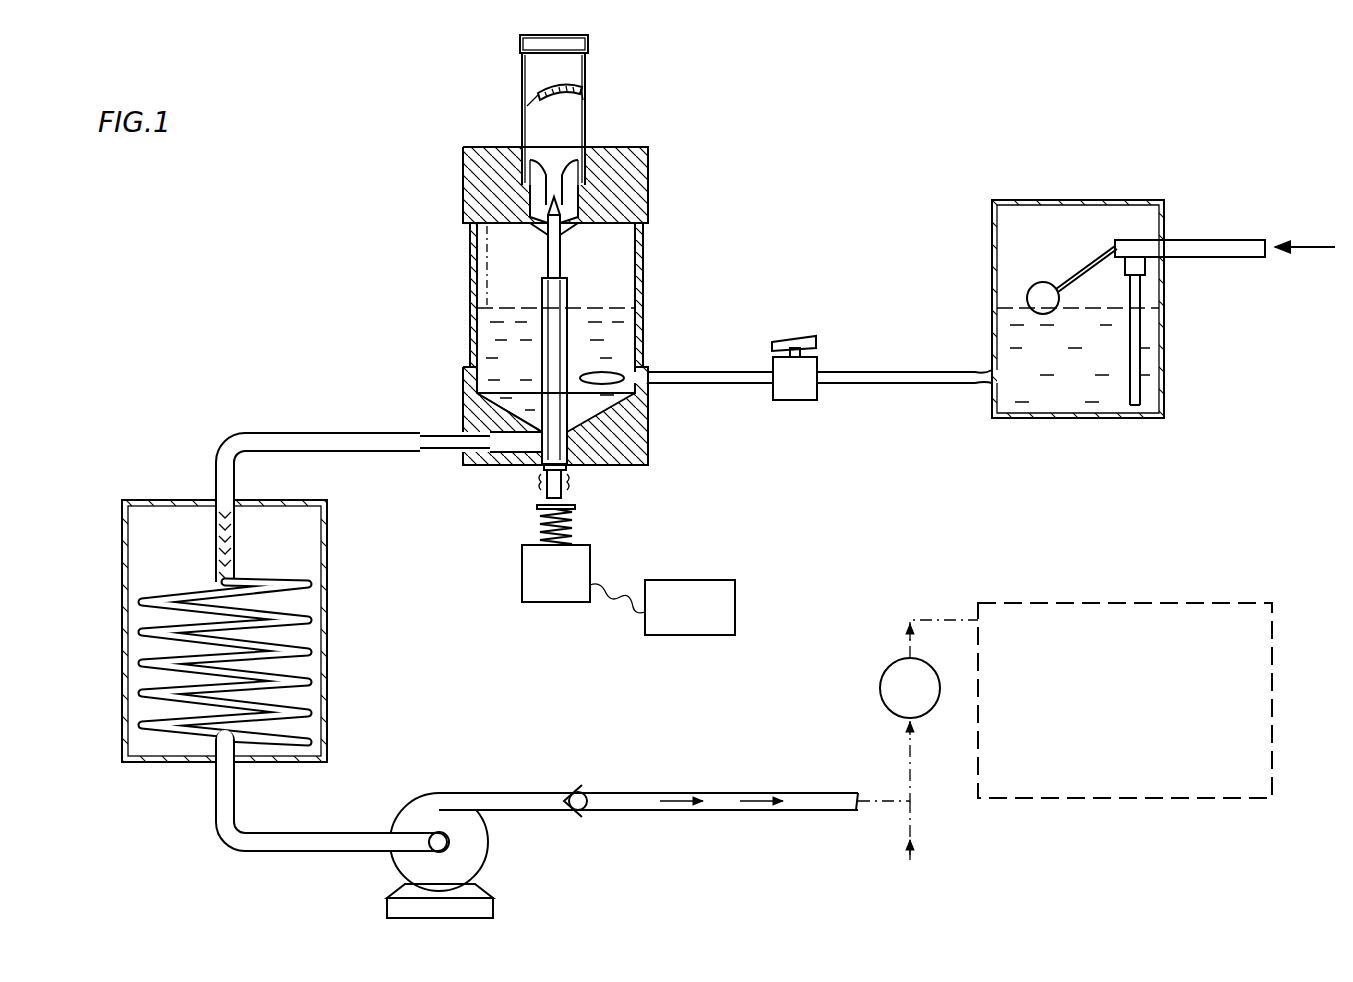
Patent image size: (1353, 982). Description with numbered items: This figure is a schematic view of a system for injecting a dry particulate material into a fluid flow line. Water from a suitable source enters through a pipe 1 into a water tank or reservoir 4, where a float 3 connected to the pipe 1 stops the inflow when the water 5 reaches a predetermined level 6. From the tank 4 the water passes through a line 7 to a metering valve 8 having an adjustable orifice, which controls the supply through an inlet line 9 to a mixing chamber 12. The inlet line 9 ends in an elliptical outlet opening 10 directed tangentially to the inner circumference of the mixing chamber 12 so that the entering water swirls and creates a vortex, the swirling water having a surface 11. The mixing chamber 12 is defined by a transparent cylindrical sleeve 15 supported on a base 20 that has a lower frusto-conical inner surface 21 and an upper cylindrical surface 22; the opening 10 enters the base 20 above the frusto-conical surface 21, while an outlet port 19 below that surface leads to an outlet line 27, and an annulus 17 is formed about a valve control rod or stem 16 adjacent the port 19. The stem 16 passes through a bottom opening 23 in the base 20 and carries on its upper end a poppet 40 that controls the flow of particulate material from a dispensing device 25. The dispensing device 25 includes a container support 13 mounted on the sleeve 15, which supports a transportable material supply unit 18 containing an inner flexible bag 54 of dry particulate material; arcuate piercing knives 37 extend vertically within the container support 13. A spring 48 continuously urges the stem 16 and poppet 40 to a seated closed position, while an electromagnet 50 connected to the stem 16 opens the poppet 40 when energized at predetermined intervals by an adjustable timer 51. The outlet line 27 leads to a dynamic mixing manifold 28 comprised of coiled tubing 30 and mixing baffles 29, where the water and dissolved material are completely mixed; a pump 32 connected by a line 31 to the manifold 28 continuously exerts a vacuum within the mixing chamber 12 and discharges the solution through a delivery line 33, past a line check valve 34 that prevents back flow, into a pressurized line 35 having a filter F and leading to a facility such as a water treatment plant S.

The pipe 1 is at (1315, 250).
The float 3 is at (1043, 282).
The water tank 4 is at (1012, 200).
The water 5 is at (1106, 400).
The predetermined level 6 is at (1010, 308).
The line 7 is at (907, 385).
The metering valve 8 is at (810, 368).
The inlet line 9 is at (729, 385).
The elliptical outlet opening 10 is at (603, 377).
The surface of the swirling water 11 is at (610, 305).
The mixing chamber 12 is at (615, 256).
The container support 13 is at (472, 182).
The transparent cylindrical sleeve 15 is at (470, 241).
The valve control rod or stem 16 is at (544, 290).
The annulus 17 is at (600, 466).
The material supply unit 18 is at (590, 82).
The outlet port 19 is at (513, 450).
The base 20 is at (652, 453).
The frusto-conical inner surface 21 is at (478, 394).
The upper cylindrical surface 22 is at (478, 366).
The bottom opening 23 is at (545, 471).
The dispensing device 25 is at (668, 150).
The outlet line 27 is at (306, 432).
The dynamic mixing manifold 28 is at (172, 498).
The mixing baffles 29 is at (216, 532).
The coiled tubing 30 is at (140, 622).
The line 31 is at (215, 836).
The pump 32 is at (422, 795).
The delivery line 33 is at (518, 793).
The line check valve 34 is at (585, 810).
The pressurized line 35 is at (916, 828).
The piercing blades 37 is at (576, 196).
The poppet 40 is at (562, 216).
The spring 48 is at (576, 531).
The electromagnet 50 is at (558, 605).
The adjustable timer 51 is at (738, 614).
The flexible bag 54 is at (535, 118).
The filter F is at (910, 688).
The water treatment plant S is at (1117, 603).